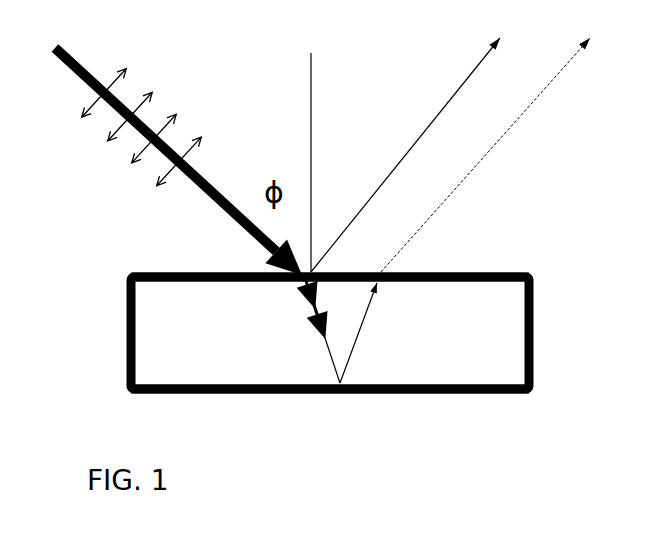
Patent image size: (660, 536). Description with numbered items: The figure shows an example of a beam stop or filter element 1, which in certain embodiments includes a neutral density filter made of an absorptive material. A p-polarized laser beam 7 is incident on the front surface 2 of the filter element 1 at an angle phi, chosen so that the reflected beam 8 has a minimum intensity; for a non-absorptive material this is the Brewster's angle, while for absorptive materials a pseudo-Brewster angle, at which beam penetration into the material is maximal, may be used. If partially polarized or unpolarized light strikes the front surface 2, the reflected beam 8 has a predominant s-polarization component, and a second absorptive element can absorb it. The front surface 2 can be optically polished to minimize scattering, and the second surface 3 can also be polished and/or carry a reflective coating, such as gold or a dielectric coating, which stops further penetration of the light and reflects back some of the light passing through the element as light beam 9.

The filter element 1 is at (533, 330).
The front surface 2 is at (178, 271).
The second surface 3 is at (492, 393).
The p-polarized laser beam 7 is at (216, 202).
The reflected beam 8 is at (405, 155).
The light beam 9 is at (485, 155).